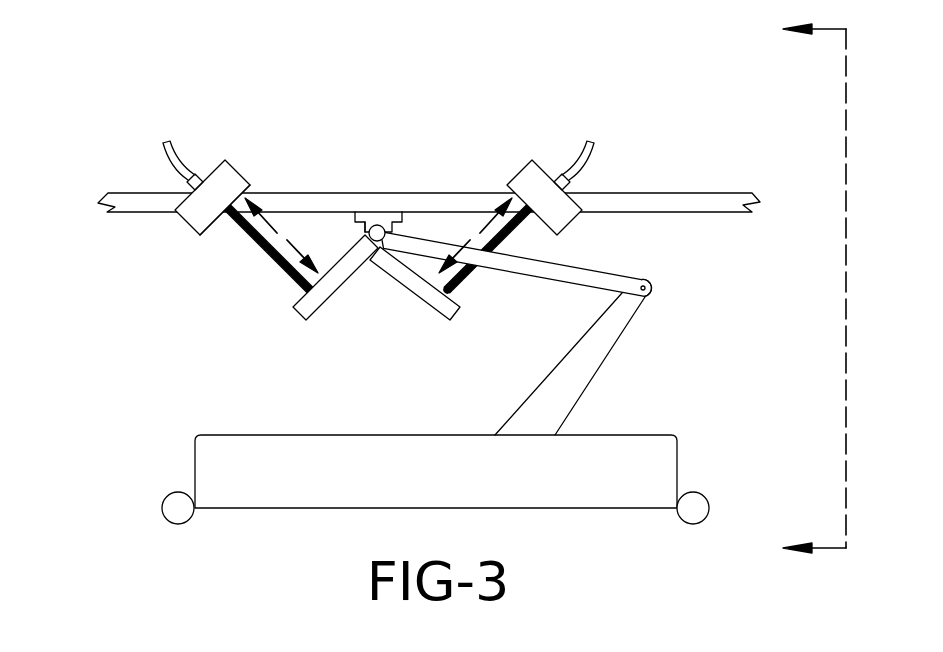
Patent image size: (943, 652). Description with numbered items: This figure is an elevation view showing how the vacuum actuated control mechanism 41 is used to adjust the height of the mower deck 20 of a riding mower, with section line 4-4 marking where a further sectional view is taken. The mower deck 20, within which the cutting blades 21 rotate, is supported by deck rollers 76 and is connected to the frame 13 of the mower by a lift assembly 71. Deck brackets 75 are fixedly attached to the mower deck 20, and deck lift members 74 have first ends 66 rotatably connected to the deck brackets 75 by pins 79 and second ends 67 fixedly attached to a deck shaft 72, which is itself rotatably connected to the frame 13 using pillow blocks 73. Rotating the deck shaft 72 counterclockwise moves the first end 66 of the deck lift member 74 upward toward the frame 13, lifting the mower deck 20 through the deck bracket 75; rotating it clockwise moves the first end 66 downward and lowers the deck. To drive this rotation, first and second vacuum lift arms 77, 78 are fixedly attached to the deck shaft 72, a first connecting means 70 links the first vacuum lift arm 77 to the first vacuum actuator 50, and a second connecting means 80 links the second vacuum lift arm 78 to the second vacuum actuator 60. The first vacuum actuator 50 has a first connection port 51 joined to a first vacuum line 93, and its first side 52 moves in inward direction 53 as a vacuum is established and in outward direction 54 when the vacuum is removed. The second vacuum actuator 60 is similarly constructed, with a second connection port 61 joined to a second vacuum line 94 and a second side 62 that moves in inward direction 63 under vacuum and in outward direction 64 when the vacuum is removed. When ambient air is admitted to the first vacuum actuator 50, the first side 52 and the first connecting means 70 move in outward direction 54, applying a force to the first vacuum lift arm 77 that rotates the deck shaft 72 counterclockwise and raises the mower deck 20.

The section line 4- 4 is at (805, 288).
The frame 13 is at (130, 213).
The mower deck 20 is at (436, 471).
The cutting blades 21 is at (316, 528).
The vacuum actuated control mechanism 41 is at (295, 52).
The first vacuum actuator 50 is at (233, 180).
The first connection port 51 is at (196, 172).
The first side 52 is at (203, 236).
The inward direction 53 is at (276, 228).
The outward direction 54 is at (290, 243).
The second vacuum actuator 60 is at (522, 180).
The second connection port 61 is at (557, 174).
The second side 62 is at (548, 238).
The inward direction 63 is at (478, 224).
The outward direction 64 is at (457, 240).
The first end 66 is at (637, 277).
The second end 67 is at (407, 232).
The first connecting means 70 is at (292, 283).
The lift assembly 71 is at (200, 358).
The deck shaft 72 is at (380, 248).
The pillow blocks 73 is at (374, 216).
The deck lift members 74 is at (590, 265).
The deck brackets 75 is at (590, 363).
The deck rollers 76 is at (166, 494).
The first vacuum lift arm 77 is at (313, 303).
The second vacuum lift arm 78 is at (450, 317).
The pins 79 is at (643, 297).
The second connecting means 80 is at (467, 278).
The first vacuum line 93 is at (163, 152).
The second vacuum line 94 is at (592, 152).